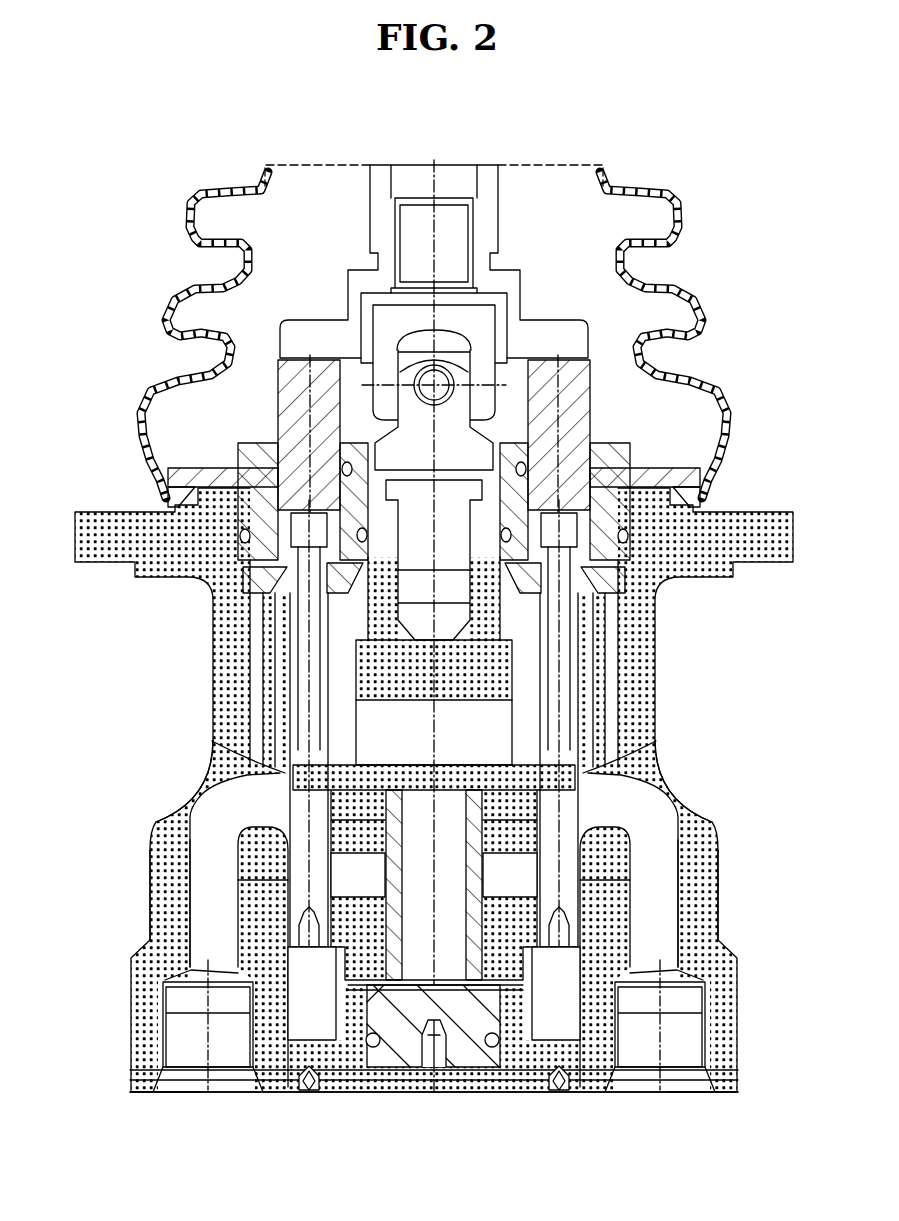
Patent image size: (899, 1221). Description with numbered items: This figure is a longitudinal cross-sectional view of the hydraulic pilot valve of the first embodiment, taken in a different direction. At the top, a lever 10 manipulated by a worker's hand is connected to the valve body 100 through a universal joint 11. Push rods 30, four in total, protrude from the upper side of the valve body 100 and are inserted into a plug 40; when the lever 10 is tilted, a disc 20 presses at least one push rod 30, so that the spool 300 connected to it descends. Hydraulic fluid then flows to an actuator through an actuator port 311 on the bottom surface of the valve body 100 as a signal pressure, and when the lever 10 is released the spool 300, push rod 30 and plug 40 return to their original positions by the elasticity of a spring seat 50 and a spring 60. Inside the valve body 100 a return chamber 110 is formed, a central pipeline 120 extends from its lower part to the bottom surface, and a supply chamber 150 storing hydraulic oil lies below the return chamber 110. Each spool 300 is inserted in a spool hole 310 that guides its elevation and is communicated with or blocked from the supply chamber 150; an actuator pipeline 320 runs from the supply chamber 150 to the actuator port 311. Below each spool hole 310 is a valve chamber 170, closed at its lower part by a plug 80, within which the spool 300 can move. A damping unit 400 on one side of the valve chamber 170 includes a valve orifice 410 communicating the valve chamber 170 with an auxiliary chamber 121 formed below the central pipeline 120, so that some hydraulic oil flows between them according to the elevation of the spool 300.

The lever 10 is at (497, 186).
The universal joint 11 is at (383, 363).
The disc 20 is at (549, 322).
The push rod 30 is at (592, 400).
The plug 40 is at (257, 448).
The spring seat 50 is at (250, 515).
The spring 60 is at (263, 650).
The plug 80 is at (310, 1097).
The valve body 100 is at (140, 808).
The return chamber 110 is at (290, 760).
The central pipeline 120 is at (400, 763).
The auxiliary chamber 121 is at (353, 982).
The supply chamber 150 is at (280, 880).
The valve chamber 170 is at (290, 998).
The spool 300 is at (312, 722).
The spool hole 310 is at (218, 772).
The actuator port 311 is at (195, 1097).
The actuator pipeline 320 is at (280, 972).
The damping unit 400 is at (508, 1112).
The valve orifice 410 is at (530, 967).